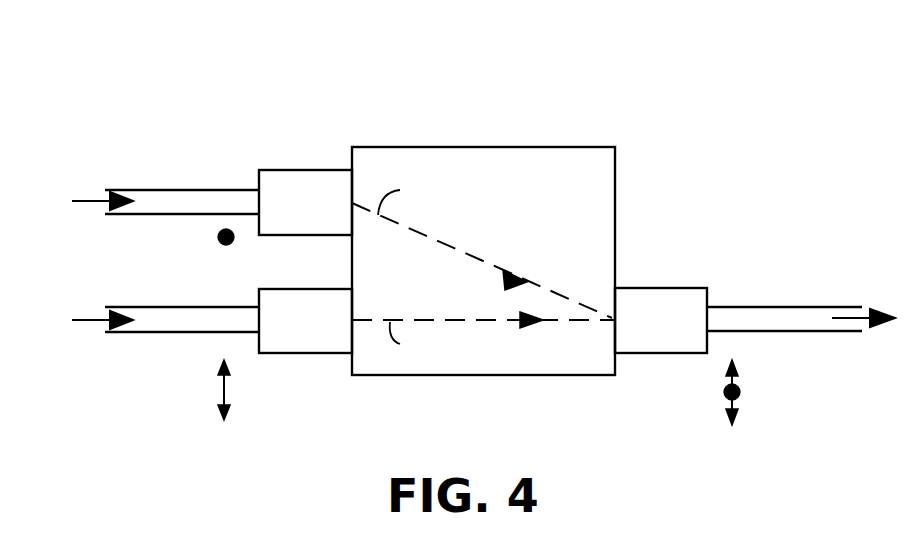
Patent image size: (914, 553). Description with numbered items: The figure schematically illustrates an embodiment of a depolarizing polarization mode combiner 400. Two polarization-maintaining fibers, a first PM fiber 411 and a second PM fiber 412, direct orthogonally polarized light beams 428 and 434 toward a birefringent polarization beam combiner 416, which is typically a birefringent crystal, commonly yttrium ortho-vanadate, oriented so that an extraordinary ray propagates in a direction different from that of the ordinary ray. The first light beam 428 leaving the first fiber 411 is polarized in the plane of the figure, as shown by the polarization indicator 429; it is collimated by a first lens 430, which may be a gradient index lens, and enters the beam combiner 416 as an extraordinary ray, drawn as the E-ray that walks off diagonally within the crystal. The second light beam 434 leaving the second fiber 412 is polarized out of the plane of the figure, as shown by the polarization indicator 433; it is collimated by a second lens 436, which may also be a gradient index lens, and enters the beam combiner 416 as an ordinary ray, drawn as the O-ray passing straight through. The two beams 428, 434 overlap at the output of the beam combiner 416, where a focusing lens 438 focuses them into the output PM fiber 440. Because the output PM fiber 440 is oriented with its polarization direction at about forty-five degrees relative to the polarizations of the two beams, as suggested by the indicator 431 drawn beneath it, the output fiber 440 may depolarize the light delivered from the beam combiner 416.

The depolarizing polarization mode combiner 400 is at (702, 98).
The first PM fiber 411 is at (182, 190).
The second PM fiber 412 is at (152, 333).
The birefringent polarization beam combiner 416 is at (467, 147).
The first light beam 428 is at (95, 199).
The polarization indicator 429 is at (219, 244).
The first lens 430 is at (320, 170).
The output polarization direction indicator 431 is at (742, 390).
The polarization indicator 433 is at (222, 390).
The second light beam 434 is at (90, 322).
The second lens 436 is at (290, 354).
The focusing lens 438 is at (660, 288).
The output PM fiber 440 is at (797, 307).